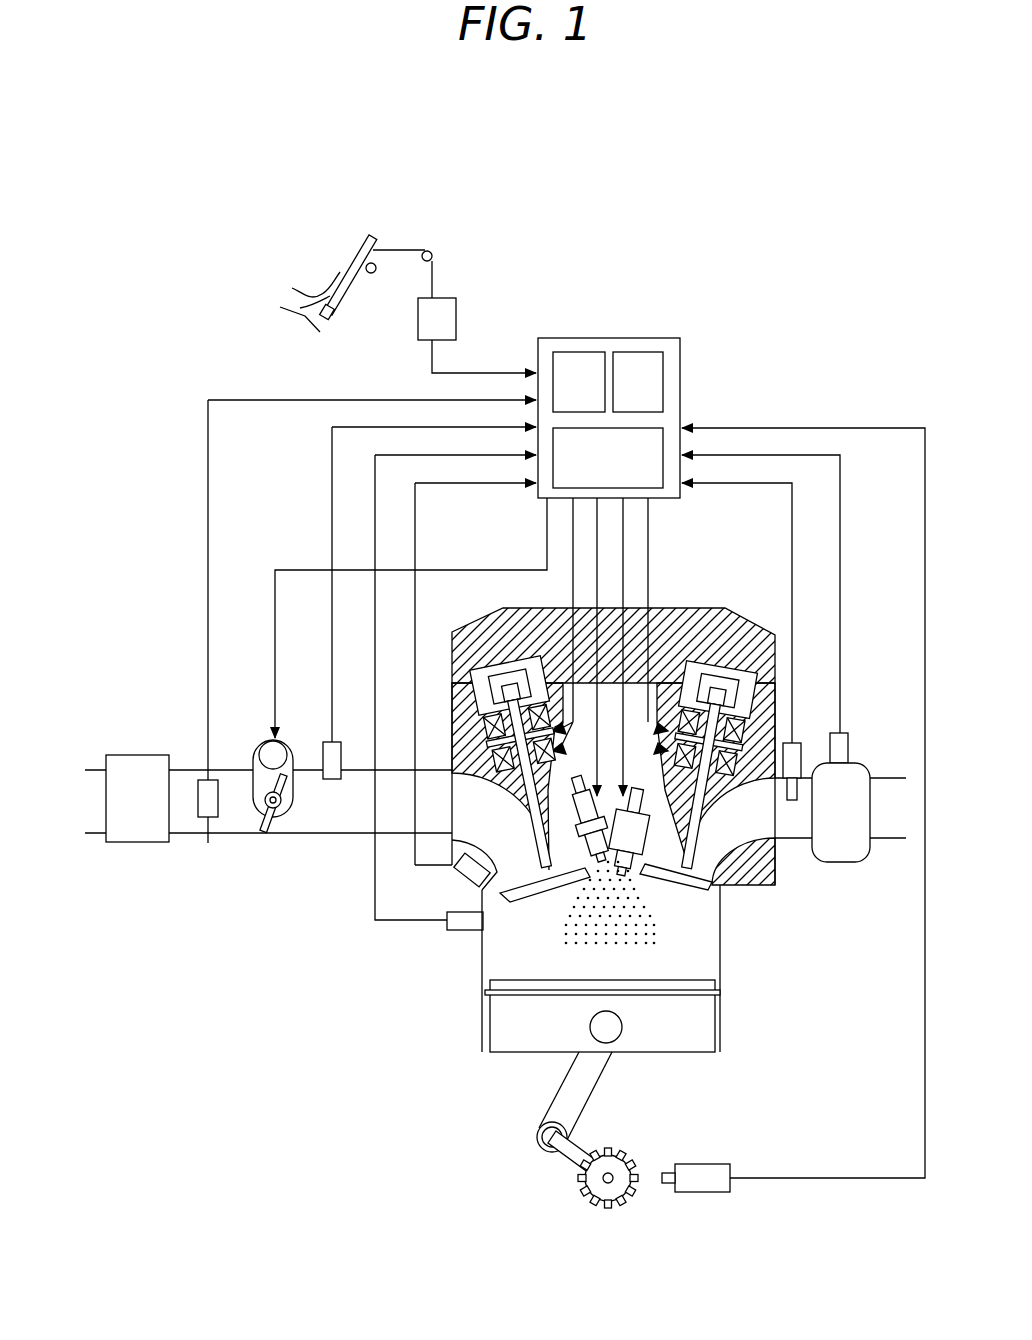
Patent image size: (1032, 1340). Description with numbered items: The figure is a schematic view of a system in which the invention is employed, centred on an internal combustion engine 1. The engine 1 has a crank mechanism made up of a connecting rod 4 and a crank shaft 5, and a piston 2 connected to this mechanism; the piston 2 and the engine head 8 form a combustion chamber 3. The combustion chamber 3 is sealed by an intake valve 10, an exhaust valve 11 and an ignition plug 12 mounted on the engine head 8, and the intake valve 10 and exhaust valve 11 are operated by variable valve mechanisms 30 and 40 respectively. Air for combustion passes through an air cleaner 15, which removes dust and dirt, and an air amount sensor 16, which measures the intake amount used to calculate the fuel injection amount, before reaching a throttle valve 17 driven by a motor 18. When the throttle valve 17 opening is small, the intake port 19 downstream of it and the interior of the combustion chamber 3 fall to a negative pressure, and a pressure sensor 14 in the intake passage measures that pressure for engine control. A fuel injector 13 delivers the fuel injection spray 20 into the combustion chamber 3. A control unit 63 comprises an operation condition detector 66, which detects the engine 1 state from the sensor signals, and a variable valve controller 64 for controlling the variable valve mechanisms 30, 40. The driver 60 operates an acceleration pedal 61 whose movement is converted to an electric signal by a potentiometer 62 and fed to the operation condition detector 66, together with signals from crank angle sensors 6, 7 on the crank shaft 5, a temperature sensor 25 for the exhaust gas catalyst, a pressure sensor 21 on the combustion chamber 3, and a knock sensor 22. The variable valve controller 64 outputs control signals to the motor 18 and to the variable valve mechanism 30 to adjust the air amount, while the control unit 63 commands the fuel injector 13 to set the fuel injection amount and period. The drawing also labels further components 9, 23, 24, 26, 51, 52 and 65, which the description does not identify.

The internal combustion engine 1 is at (360, 944).
The piston 2 is at (510, 1032).
The combustion chamber 3 is at (520, 946).
The connecting rod 4 is at (556, 1098).
The crank shaft 5 is at (570, 1150).
The crank angle sensor 6 is at (618, 1200).
The crank angle sensor 7 is at (708, 1196).
The engine head 8 is at (746, 900).
The cylinder head 9 is at (748, 640).
The intake valve 10 is at (544, 886).
The exhaust valve 11 is at (690, 882).
The ignition plug 12 is at (586, 878).
The fuel injector 13 is at (636, 874).
The pressure sensor 14 is at (346, 742).
The air cleaner 15 is at (108, 756).
The air amount sensor 16 is at (205, 787).
The throttle valve 17 is at (270, 832).
The motor 18 is at (290, 742).
The intake port 19 is at (344, 822).
The fuel injection spray 20 is at (636, 940).
The pressure sensor 21 is at (454, 878).
The knock sensor 22 is at (452, 926).
The exhaust passage 23 is at (750, 830).
The air-fuel ratio sensor 24 is at (800, 758).
The temperature sensor 25 is at (846, 744).
The catalytic converter 26 is at (872, 766).
The variable valve mechanism 30 is at (472, 722).
The variable valve mechanism 40 is at (752, 710).
The intake valve electromagnetic actuator 51 is at (504, 690).
The exhaust valve electromagnetic actuator 52 is at (736, 692).
The driver 60 is at (296, 312).
The acceleration pedal 61 is at (362, 238).
The potentiometer 62 is at (460, 298).
The control unit 63 is at (664, 338).
The variable valve controller 64 is at (580, 362).
The memory 65 is at (652, 372).
The operation condition detector 66 is at (646, 442).